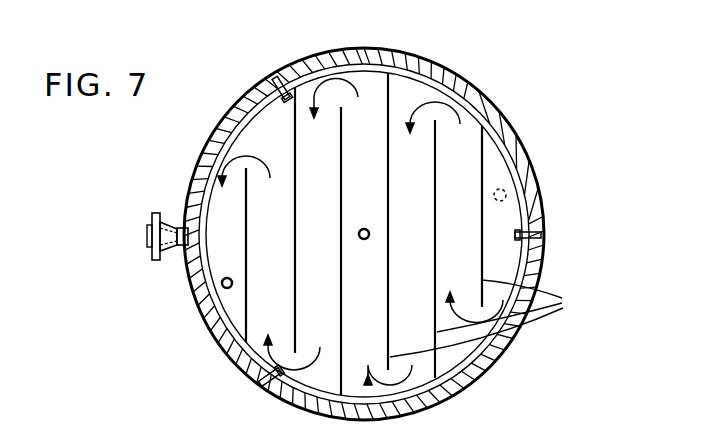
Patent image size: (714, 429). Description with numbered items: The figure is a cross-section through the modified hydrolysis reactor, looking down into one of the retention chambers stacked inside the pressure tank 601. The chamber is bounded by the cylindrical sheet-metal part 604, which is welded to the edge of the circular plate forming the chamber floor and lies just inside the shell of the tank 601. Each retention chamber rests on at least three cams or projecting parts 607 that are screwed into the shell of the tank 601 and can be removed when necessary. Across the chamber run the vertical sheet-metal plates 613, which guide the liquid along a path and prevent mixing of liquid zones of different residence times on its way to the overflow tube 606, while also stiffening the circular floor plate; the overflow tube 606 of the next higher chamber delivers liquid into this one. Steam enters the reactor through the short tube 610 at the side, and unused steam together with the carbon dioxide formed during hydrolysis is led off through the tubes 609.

The pressure tank 601 is at (514, 125).
The cylindrical sheet-metal part 604 is at (442, 87).
The overflow tube 606 is at (223, 288).
The cams or projecting parts 607 is at (278, 83).
The tubes 609 is at (362, 228).
The short tube 610 is at (185, 228).
The vertical sheet-metal plates 613 is at (497, 318).